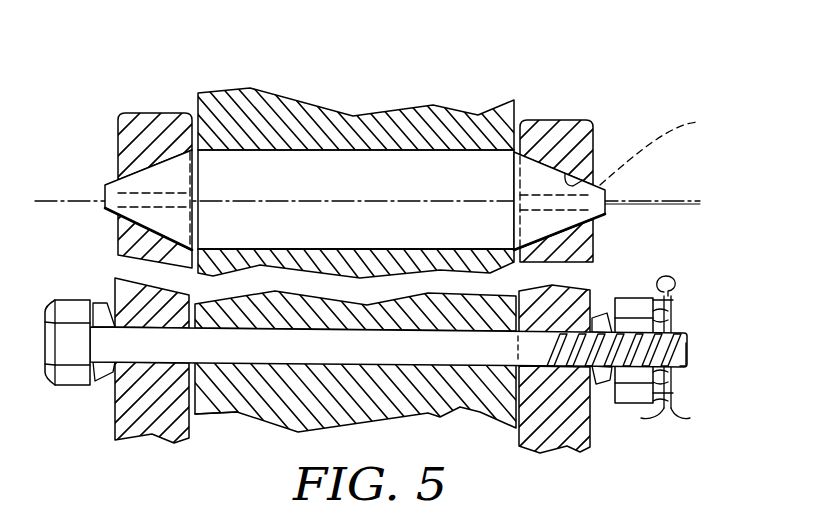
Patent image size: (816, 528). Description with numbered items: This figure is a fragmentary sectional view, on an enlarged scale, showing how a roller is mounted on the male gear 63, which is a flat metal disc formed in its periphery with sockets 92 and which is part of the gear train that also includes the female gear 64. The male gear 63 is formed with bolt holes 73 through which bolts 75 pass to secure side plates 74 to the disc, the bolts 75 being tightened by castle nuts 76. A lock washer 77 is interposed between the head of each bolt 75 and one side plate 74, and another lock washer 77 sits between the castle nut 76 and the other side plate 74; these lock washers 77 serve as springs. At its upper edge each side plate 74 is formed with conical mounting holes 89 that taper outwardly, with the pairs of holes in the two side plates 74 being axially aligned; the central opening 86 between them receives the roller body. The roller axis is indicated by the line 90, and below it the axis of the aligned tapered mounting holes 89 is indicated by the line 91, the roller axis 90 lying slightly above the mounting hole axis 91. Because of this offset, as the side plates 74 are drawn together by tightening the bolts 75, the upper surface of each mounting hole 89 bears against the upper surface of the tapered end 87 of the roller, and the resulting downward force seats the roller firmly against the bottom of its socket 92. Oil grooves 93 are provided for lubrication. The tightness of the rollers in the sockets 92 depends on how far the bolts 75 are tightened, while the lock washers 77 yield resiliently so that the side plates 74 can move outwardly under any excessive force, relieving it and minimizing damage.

The male gear 63 is at (462, 404).
The female gear 64 is at (428, 102).
The bolt holes 73 is at (266, 360).
The side plates 74 is at (376, 164).
The bolts 75 is at (387, 361).
The castle nut 76 is at (630, 403).
The lock washer 77 is at (100, 383).
The bore 86 is at (385, 241).
The tapered end 87 is at (183, 190).
The conical mounting holes 89 is at (585, 172).
The roller axis 90 is at (648, 201).
The mounting hole axis 91 is at (670, 207).
The socket 92 is at (280, 257).
The oil grooves 93 is at (663, 148).